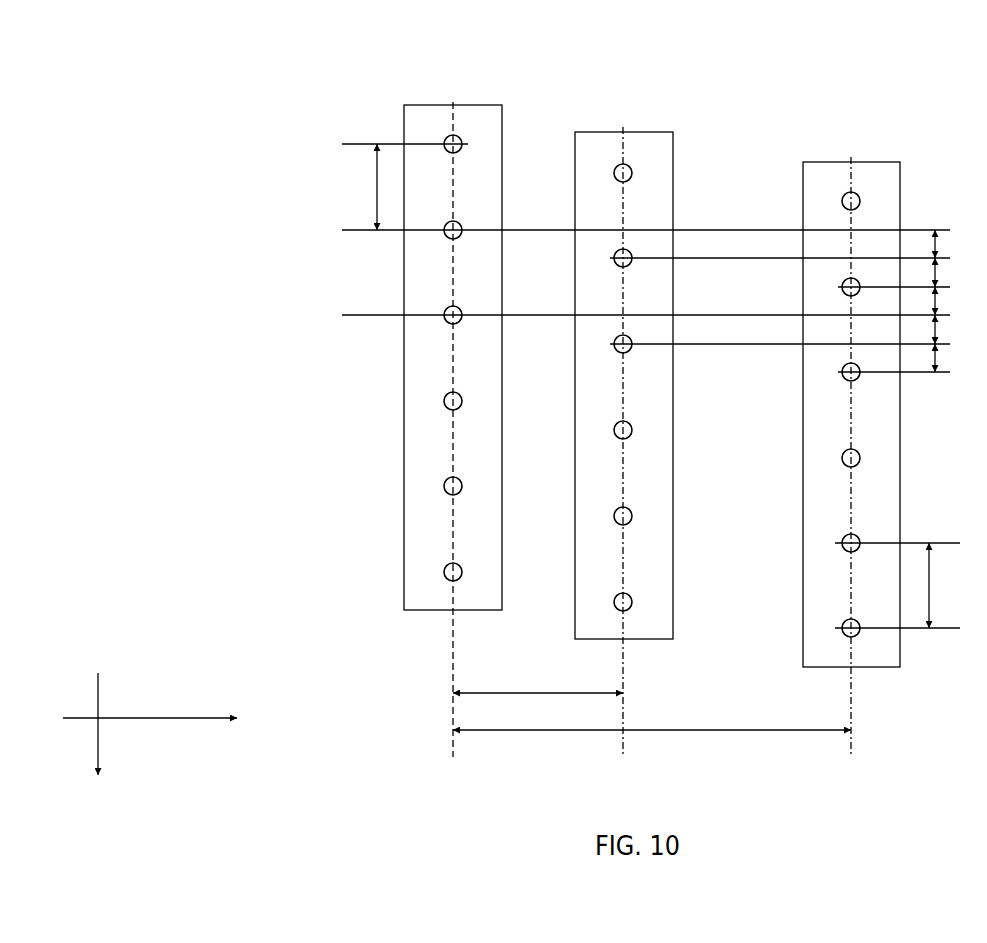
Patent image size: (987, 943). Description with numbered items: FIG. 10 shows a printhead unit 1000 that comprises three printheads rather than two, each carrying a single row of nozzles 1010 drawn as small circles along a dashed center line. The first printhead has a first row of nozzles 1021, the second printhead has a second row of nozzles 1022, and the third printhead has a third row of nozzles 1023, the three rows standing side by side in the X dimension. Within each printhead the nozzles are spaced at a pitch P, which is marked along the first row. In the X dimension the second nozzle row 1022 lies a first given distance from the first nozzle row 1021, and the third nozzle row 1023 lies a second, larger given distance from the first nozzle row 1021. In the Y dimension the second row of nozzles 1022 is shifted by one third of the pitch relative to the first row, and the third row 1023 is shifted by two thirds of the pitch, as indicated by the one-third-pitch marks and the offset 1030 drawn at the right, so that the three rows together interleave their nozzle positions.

The light source arrangement 1000 is at (250, 93).
The light emitting elements 1010 is at (443, 403).
The first row of nozzles 1021 is at (454, 102).
The second row of nozzles 1022 is at (623, 127).
The third row of nozzles 1023 is at (851, 157).
The spacing between light emitting elements 1030 is at (904, 585).